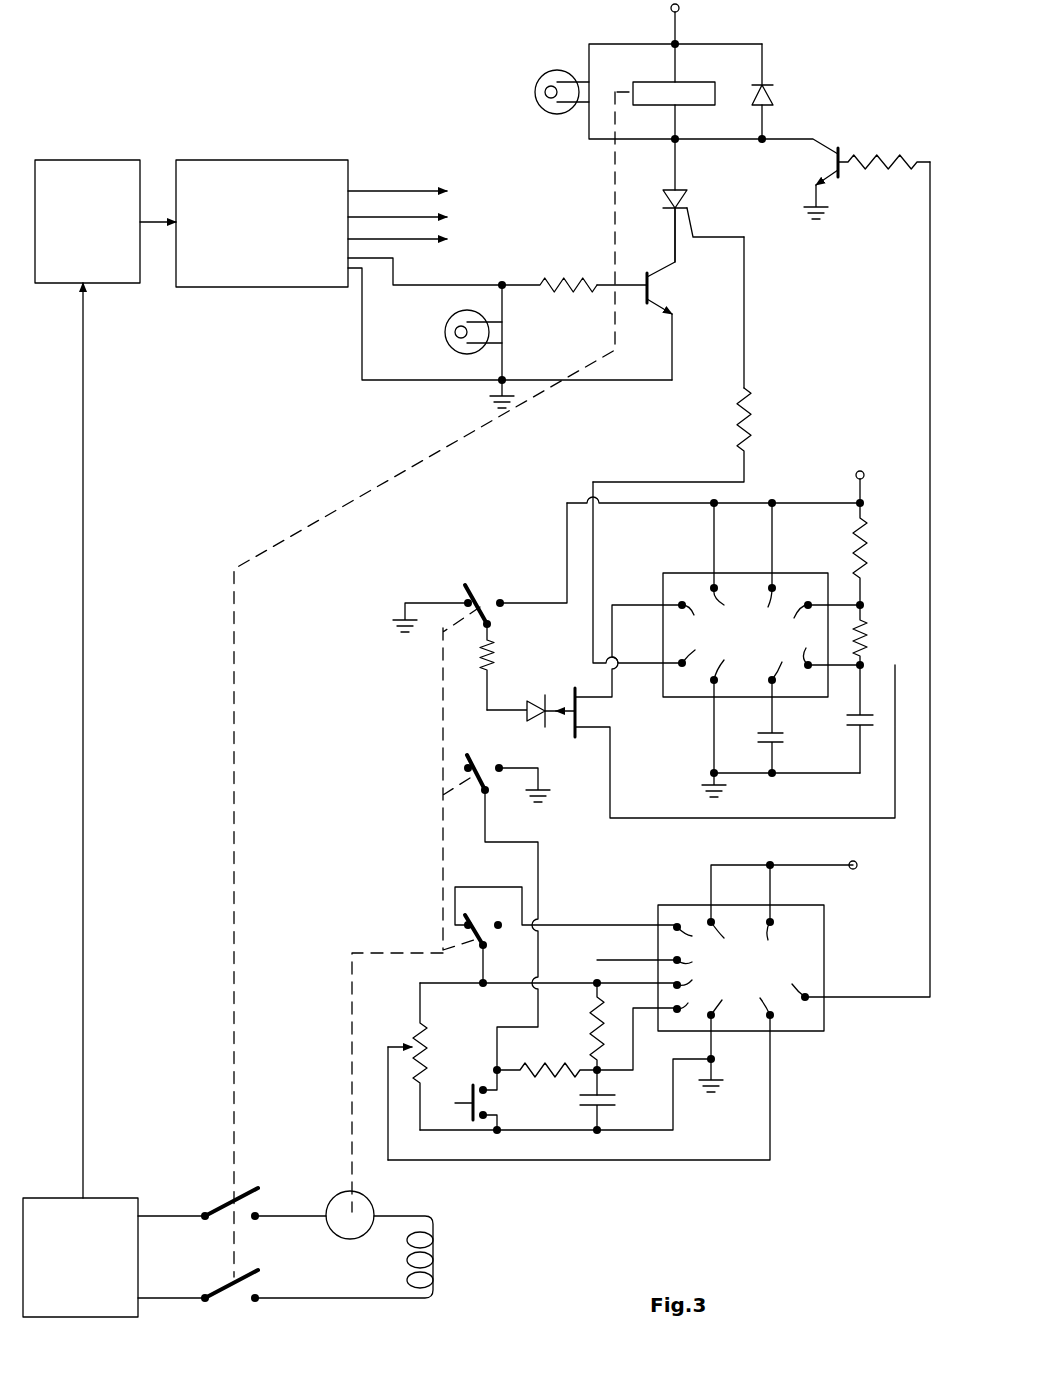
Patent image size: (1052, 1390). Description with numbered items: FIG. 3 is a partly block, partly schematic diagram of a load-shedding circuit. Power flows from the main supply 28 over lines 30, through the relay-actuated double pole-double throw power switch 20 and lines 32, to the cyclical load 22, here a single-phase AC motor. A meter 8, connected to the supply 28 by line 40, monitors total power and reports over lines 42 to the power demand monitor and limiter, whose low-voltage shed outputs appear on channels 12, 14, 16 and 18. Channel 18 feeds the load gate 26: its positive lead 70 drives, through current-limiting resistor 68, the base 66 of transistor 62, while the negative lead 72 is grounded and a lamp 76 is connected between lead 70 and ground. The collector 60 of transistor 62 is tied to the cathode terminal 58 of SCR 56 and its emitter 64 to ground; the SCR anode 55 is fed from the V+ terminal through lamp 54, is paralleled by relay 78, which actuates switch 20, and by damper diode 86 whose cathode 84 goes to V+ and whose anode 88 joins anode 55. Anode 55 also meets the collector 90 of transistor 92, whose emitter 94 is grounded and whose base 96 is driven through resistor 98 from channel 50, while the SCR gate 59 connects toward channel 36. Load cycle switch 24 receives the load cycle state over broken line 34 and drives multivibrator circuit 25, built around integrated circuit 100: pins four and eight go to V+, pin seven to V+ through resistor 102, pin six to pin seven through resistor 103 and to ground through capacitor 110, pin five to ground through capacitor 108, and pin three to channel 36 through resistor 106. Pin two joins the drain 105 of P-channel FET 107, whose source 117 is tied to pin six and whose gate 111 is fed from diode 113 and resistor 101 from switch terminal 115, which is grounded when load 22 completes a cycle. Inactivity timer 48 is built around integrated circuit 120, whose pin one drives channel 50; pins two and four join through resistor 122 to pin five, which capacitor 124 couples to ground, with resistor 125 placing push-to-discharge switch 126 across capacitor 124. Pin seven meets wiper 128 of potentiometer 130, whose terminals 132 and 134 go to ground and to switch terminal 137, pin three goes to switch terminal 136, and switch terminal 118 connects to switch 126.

The meter 8 is at (108, 160).
The lines 42 is at (152, 220).
The channel 12 is at (368, 191).
The channel 14 is at (407, 215).
The channel 16 is at (413, 245).
The power supply line to meter 40 is at (87, 585).
The channel 18 is at (328, 320).
The load gate 26 is at (398, 427).
The positive lead 70 is at (468, 285).
The negative lead 72 is at (395, 380).
The lamp 76 is at (438, 333).
The current-limiting resistor 68 is at (568, 280).
The base 66 is at (627, 288).
The collector 60 is at (668, 275).
The transistor 62 is at (690, 303).
The emitter 64 is at (674, 325).
The terminal 58 is at (673, 248).
The lamp 54 is at (527, 90).
The relay 78 is at (643, 81).
The anode 55 is at (678, 163).
The cathode 84 is at (766, 62).
The damper diode 86 is at (783, 97).
The anode 88 is at (762, 112).
The transistor 92 is at (849, 146).
The collector 90 is at (822, 148).
The emitter 94 is at (826, 187).
The base 96 is at (868, 158).
The current limiting resistor 98 is at (890, 166).
The channel 50 is at (930, 308).
The silicon controlled rectifier 56 is at (690, 203).
The gate lead 59 is at (693, 226).
The lines 36 is at (748, 334).
The resistor 106 is at (753, 407).
The multivibrator circuit 25 is at (823, 468).
The integrated circuit 100 is at (802, 568).
The resistor 102 is at (868, 550).
The resistor 103 is at (870, 635).
The capacitor 110 is at (848, 722).
The capacitor 108 is at (780, 740).
The drain terminal 105 is at (607, 680).
The field-effect transistor 107 is at (614, 716).
The source 117 is at (612, 772).
The diode 113 is at (532, 694).
The gate 111 is at (554, 727).
The resistor 101 is at (492, 644).
The terminal 115 is at (490, 622).
The load cycle switch 24 is at (479, 575).
The terminal 118 is at (490, 800).
The line 34 is at (365, 952).
The terminal 136 is at (458, 926).
The terminal 137 is at (480, 950).
The terminal 134 is at (420, 993).
The potentiometer 130 is at (430, 1078).
The wiper 128 is at (392, 1044).
The inactivity timer 48 is at (782, 1172).
The terminal 132 is at (416, 1122).
The push-to-discharge switch 126 is at (505, 1106).
The resistor 125 is at (565, 1062).
The resistor 122 is at (595, 1030).
The capacitor 124 is at (604, 1100).
The integrated circuit 120 is at (815, 1050).
The main supply 28 is at (110, 1198).
The lines 30 is at (173, 1222).
The power switch 20 is at (260, 1175).
The lines 32 is at (298, 1222).
The cyclical load 22 is at (380, 1205).